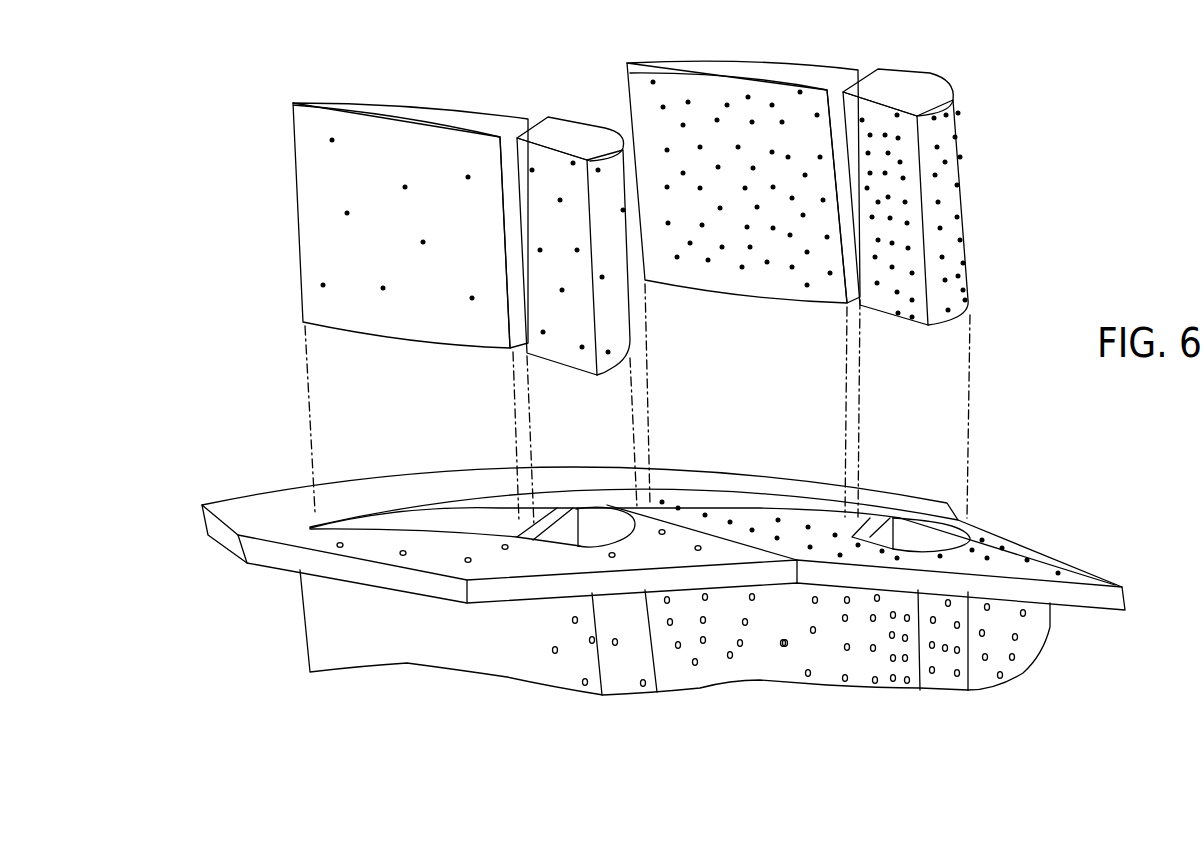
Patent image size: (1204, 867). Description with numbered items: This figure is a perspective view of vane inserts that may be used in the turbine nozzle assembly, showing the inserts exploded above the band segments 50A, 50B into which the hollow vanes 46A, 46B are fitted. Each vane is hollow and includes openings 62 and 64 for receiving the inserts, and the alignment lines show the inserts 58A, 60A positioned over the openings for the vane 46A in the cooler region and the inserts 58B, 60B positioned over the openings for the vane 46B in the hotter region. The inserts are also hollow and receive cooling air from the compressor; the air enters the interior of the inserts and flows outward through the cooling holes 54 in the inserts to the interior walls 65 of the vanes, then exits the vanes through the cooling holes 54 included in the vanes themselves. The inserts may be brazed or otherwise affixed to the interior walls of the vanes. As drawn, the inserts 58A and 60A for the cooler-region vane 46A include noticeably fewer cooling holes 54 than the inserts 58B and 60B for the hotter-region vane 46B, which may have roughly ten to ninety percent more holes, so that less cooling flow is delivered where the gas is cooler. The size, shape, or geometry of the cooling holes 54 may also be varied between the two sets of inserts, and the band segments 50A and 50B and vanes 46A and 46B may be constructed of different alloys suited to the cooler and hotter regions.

The vane 46A is at (410, 645).
The vane 46B is at (827, 673).
The band segment 50A is at (527, 593).
The band segment 50B is at (1083, 597).
The cooling holes 54 is at (405, 187).
The vane insert 58A is at (558, 132).
The vane insert 58B is at (880, 305).
The vane insert 60A is at (465, 118).
The vane insert 60B is at (777, 65).
The opening 62 is at (583, 522).
The opening 64 is at (465, 522).
The interior walls 65 is at (392, 522).